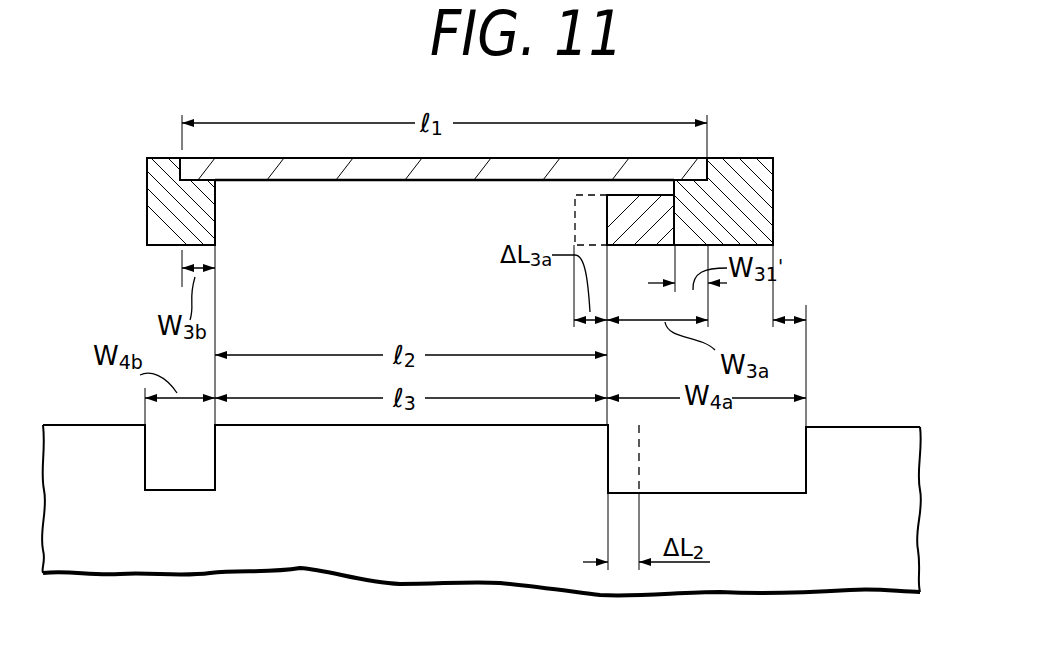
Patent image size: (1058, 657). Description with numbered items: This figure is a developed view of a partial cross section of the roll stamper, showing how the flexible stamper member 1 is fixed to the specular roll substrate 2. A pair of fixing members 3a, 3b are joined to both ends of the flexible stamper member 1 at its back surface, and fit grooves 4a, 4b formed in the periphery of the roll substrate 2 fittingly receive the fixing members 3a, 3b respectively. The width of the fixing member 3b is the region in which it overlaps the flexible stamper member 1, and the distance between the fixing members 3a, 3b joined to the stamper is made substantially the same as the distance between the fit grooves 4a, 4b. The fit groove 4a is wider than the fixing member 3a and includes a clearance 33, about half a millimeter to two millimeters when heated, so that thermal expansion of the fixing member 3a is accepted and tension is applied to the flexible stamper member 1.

The flexible stamper member 1 is at (247, 168).
The roll substrate 2 is at (867, 448).
The fixing member 3a is at (746, 146).
The fixing member 3b is at (150, 147).
The clearance 33 is at (792, 313).
The fit groove 4a is at (786, 486).
The fit groove 4b is at (193, 486).